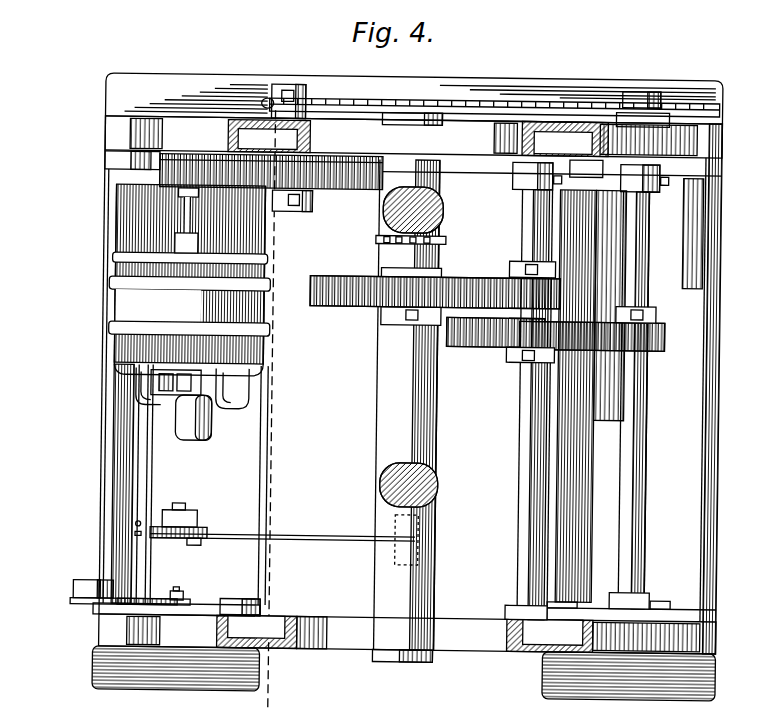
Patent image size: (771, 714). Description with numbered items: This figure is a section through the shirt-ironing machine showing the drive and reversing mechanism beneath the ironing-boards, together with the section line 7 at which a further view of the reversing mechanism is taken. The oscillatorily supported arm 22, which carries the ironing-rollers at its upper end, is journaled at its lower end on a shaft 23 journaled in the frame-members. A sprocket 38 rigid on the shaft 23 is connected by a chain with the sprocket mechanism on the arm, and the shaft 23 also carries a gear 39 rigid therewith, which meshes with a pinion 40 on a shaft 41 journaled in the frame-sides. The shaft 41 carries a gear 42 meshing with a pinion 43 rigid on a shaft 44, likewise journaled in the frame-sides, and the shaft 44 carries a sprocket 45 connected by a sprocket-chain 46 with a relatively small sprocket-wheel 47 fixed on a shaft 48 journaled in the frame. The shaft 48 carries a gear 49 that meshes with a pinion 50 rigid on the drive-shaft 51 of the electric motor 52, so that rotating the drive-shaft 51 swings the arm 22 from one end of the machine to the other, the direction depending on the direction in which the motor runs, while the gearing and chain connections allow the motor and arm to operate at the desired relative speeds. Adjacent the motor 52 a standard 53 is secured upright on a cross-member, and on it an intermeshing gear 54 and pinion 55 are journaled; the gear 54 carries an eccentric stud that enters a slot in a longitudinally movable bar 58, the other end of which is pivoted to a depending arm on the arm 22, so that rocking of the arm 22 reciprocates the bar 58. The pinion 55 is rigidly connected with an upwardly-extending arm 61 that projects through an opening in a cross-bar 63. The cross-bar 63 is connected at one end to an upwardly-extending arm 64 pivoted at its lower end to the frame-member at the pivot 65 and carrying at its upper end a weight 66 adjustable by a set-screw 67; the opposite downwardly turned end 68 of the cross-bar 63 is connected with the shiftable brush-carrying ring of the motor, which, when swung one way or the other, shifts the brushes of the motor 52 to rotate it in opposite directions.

The section line 7 is at (277, 614).
The arm 22 is at (392, 482).
The shaft 23 is at (398, 374).
The sprocket 38 is at (444, 240).
The gear 39 is at (355, 300).
The pinion 40 is at (525, 288).
The shaft 41 is at (524, 414).
The gear 42 is at (491, 340).
The pinion 43 is at (632, 338).
The shaft 44 is at (648, 410).
The sprocket 45 is at (651, 101).
The sprocket-chain 46 is at (484, 102).
The sprocket-wheel 47 is at (297, 96).
The shaft 48 is at (298, 214).
The gear 49 is at (356, 191).
The pinion 50 is at (181, 174).
The drive-shaft 51 is at (189, 220).
The electric motor 52 is at (189, 280).
The standard 53 is at (193, 513).
The gear 54 is at (201, 538).
The pinion 55 is at (198, 532).
The bar 58 is at (338, 542).
The arm 61 is at (164, 525).
The cross-bar 63 is at (151, 480).
The arm 64 is at (124, 608).
The pivot 65 is at (180, 585).
The weight 66 is at (97, 608).
The set-screw 67 is at (84, 594).
The downwardly turned end 68 is at (149, 381).